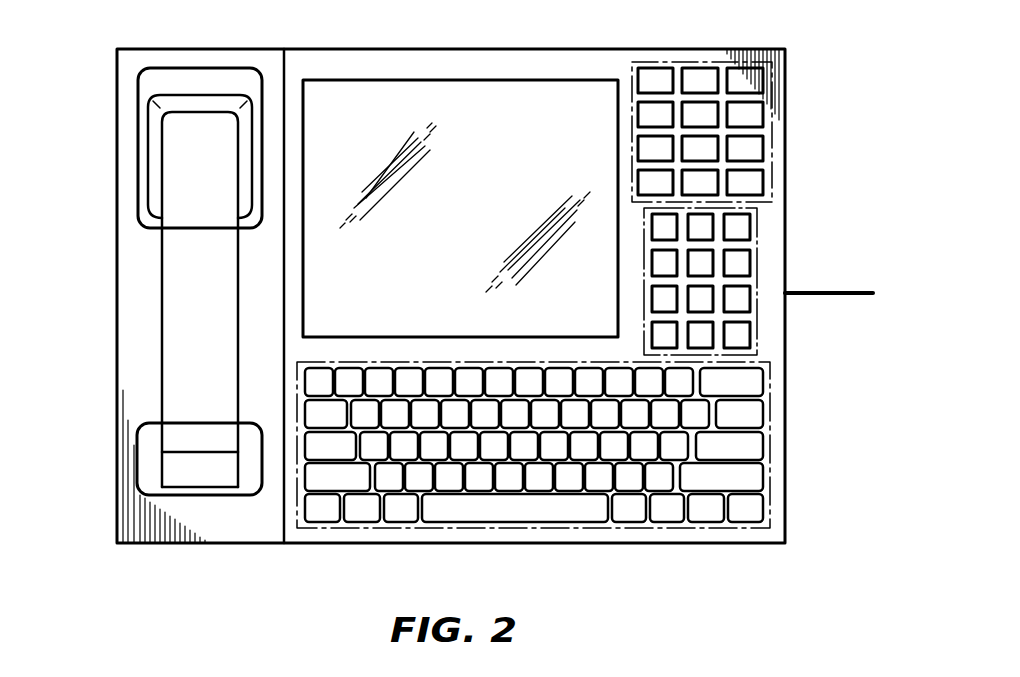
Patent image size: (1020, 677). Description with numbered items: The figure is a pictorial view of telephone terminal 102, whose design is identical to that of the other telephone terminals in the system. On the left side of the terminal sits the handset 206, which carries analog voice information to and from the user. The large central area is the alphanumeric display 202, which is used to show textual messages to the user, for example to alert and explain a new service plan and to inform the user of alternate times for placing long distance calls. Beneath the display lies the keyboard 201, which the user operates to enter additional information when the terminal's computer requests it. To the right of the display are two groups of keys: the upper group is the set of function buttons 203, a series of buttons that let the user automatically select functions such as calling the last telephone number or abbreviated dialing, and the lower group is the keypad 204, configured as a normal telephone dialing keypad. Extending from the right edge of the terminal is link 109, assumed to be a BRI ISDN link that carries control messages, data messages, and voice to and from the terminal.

The telephone terminal 102 is at (320, 48).
The alphanumeric display 202 is at (458, 80).
The function buttons 203 is at (772, 130).
The keypad 204 is at (757, 322).
The keyboard 201 is at (770, 440).
The handset 206 is at (163, 285).
The link 109 is at (830, 293).